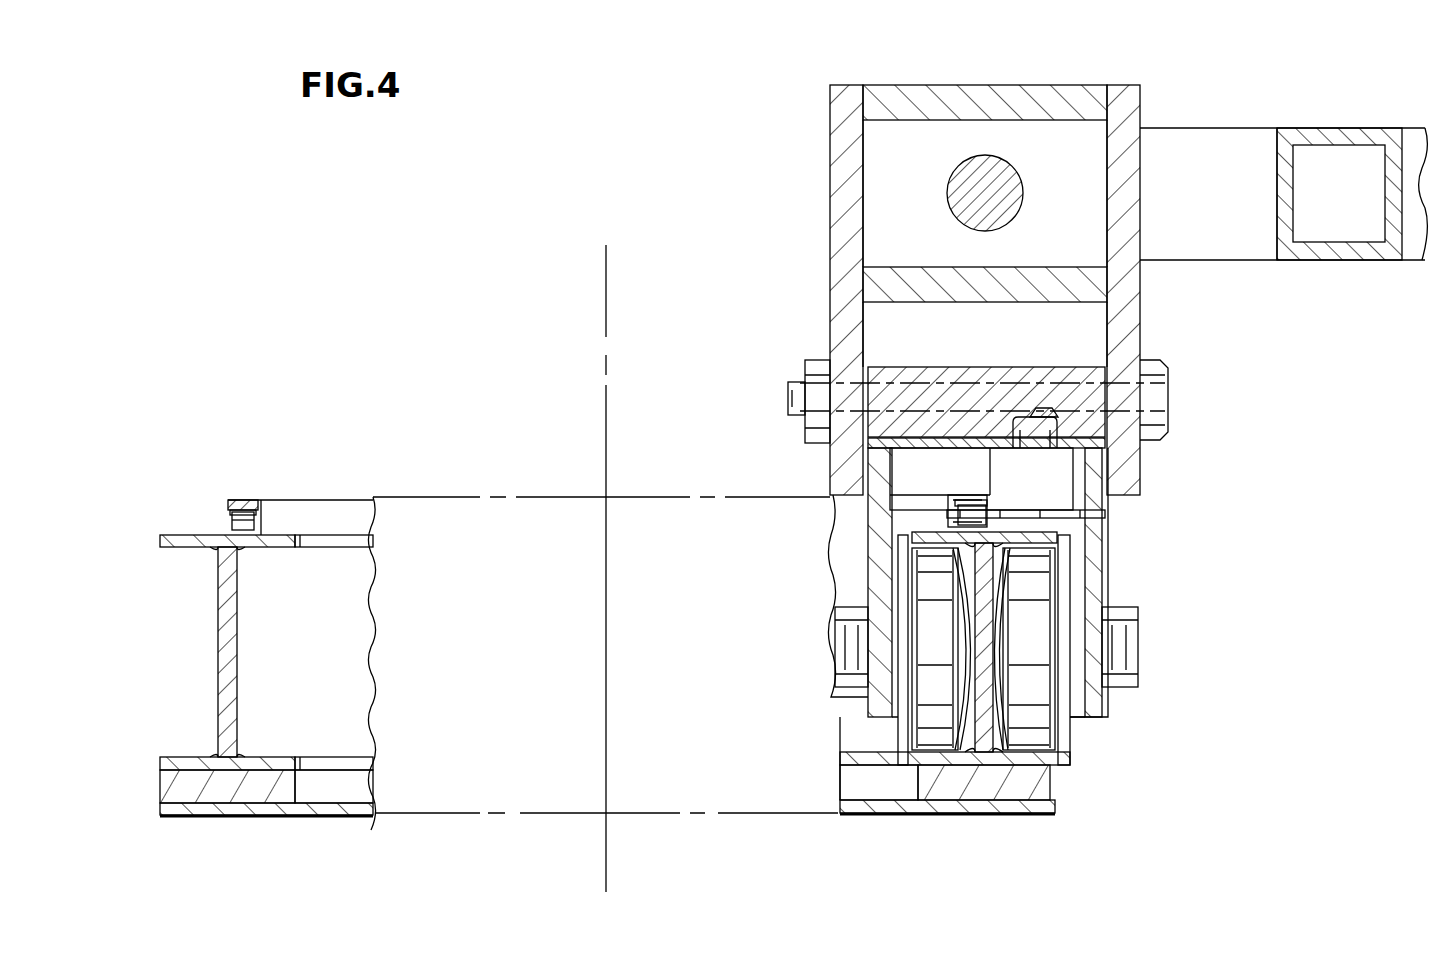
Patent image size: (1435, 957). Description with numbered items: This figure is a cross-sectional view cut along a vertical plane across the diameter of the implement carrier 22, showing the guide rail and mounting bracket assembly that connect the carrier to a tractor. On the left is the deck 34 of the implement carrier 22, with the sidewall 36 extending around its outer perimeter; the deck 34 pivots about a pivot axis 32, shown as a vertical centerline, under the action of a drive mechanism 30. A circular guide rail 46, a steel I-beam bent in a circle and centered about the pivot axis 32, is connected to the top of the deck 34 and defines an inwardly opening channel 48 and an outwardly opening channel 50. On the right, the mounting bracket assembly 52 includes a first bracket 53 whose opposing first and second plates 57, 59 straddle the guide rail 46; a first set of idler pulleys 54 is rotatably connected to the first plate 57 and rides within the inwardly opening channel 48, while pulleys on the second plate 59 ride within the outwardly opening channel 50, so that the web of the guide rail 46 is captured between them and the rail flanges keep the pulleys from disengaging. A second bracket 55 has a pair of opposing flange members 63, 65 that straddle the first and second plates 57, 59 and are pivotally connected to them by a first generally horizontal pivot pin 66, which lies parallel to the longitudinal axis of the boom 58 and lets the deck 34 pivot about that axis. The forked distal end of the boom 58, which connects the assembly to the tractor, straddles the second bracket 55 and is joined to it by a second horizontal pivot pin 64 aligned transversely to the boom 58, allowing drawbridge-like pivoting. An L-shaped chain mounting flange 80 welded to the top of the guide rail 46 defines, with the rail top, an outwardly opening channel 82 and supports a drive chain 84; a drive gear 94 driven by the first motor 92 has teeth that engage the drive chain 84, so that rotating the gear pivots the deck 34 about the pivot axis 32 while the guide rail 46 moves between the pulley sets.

The implement carrier 22 is at (1160, 779).
The drive mechanism 30 is at (1052, 491).
The pivot axis 32 is at (606, 337).
The deck 34 is at (360, 815).
The sidewall 36 is at (158, 812).
The guide rail 46 is at (165, 538).
The inwardly opening channel 48 is at (262, 662).
The outwardly opening channel 50 is at (185, 655).
The mounting bracket assembly 52 is at (1297, 327).
The first bracket 53 is at (1102, 553).
The first set of idler pulleys 54 is at (954, 699).
The second bracket 55 is at (1140, 87).
The first plate 57 is at (868, 568).
The boom 58 is at (1418, 128).
The second plate 59 is at (1102, 592).
The flange member 63 is at (835, 146).
The second pivot pin 64 is at (960, 172).
The flange member 65 is at (1140, 100).
The first pivot pin 66 is at (800, 385).
The chain mounting flange 80 is at (242, 500).
The outwardly opening channel 82 is at (228, 515).
The drive chain 84 is at (232, 507).
The first motor 92 is at (1037, 418).
The drive gear 94 is at (1105, 520).